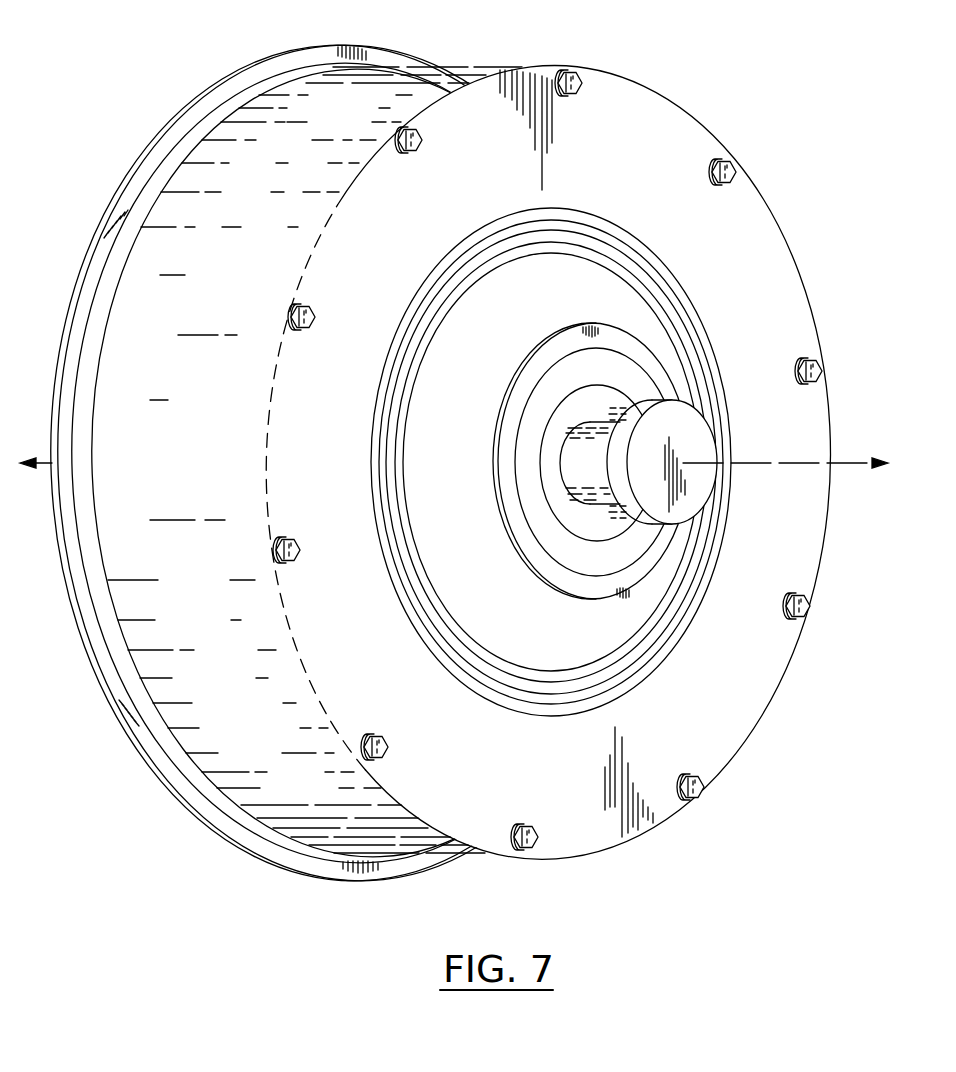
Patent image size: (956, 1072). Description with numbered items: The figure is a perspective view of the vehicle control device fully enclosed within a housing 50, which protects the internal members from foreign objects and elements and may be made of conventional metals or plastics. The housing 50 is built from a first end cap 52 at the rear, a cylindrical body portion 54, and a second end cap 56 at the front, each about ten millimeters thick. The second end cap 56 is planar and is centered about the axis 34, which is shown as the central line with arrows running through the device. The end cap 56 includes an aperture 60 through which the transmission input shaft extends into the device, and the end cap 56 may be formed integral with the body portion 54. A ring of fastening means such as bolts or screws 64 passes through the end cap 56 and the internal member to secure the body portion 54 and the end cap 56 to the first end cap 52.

The axis 34 is at (860, 463).
The housing 50 is at (795, 198).
The first end cap 52 is at (227, 78).
The body portion 54 is at (480, 65).
The second end cap 56 is at (635, 103).
The aperture 60 is at (574, 461).
The bolts or screws 64 is at (699, 789).